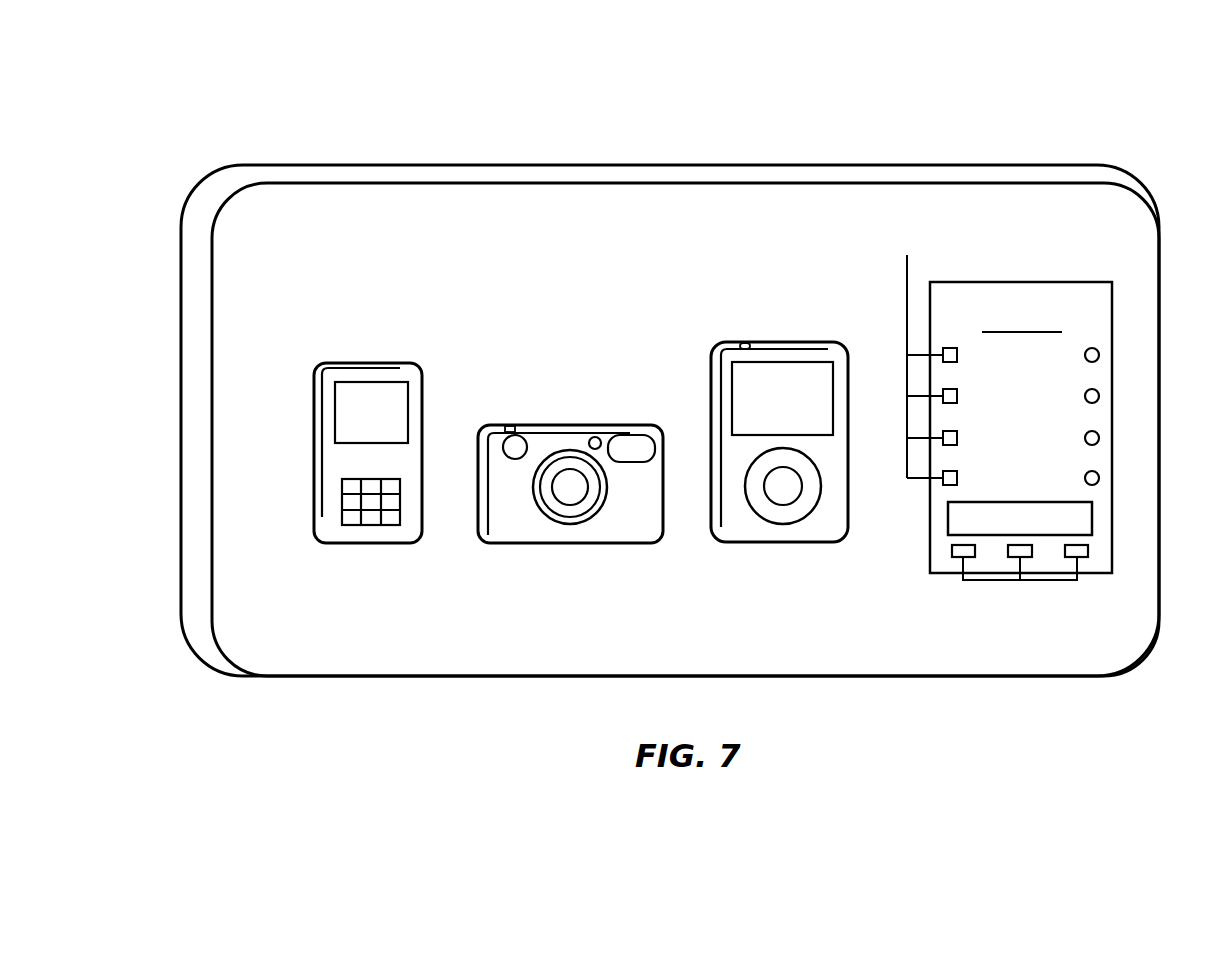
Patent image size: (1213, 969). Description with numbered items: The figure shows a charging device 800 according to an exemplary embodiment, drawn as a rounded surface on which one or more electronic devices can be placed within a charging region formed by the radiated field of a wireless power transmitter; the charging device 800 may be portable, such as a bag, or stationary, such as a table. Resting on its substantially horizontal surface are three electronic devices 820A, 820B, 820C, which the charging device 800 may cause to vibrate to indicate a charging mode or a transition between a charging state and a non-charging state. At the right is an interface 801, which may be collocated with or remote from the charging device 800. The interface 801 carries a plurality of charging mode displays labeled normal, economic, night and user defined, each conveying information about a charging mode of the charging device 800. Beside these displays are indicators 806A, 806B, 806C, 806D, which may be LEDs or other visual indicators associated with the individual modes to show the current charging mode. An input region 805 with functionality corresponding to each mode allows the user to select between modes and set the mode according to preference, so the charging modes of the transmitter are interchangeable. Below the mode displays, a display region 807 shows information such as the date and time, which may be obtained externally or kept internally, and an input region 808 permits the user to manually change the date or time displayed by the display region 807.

The charging device 800 is at (220, 88).
The interface 801 is at (1075, 282).
The input region 805 is at (912, 357).
The indicator 806A is at (1099, 355).
The indicator 806B is at (1099, 396).
The indicator 806C is at (1099, 438).
The indicator 806D is at (1099, 478).
The display region 807 is at (1092, 518).
The input region 808 is at (1020, 580).
The electronic device 820A is at (355, 367).
The electronic device 820B is at (572, 440).
The electronic device 820C is at (765, 352).